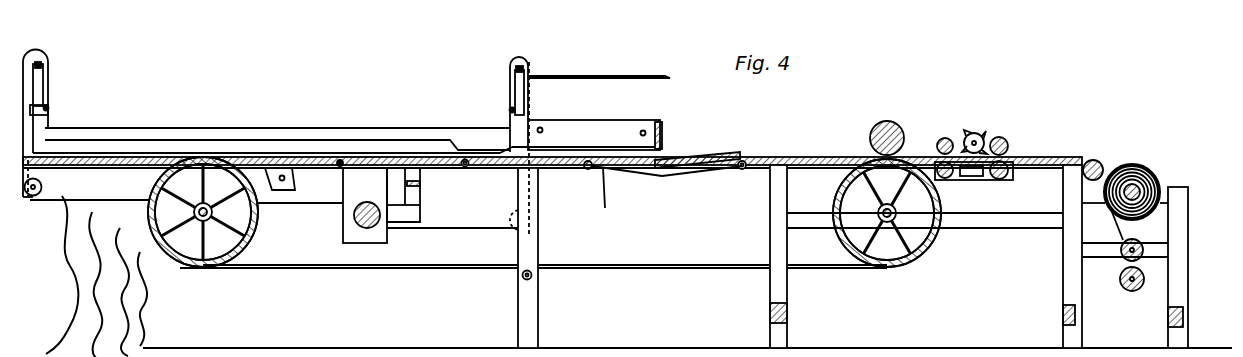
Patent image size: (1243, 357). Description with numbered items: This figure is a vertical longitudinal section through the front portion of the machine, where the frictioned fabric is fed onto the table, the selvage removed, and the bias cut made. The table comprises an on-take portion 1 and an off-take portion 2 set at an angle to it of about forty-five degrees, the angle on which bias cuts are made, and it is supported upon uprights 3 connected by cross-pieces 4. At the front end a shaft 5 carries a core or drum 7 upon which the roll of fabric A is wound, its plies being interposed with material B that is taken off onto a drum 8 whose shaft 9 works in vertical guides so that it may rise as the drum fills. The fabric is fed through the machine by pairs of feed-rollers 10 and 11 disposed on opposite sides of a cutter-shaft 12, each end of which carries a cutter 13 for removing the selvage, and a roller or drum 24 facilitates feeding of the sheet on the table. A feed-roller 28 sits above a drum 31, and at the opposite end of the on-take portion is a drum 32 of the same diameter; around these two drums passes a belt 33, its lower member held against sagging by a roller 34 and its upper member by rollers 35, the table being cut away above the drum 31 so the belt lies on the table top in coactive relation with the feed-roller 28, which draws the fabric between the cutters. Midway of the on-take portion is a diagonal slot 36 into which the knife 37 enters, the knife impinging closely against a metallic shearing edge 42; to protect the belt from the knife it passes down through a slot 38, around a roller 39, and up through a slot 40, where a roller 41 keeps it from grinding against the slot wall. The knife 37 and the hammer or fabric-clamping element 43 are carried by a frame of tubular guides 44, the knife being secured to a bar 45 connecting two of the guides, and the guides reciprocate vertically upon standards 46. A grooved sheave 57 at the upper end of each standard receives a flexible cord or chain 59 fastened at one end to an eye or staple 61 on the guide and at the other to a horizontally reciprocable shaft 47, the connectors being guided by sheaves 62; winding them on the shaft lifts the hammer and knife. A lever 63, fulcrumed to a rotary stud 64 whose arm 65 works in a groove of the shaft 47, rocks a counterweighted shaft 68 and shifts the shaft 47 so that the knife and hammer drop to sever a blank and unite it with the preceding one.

The on-take portion 1 is at (1060, 160).
The off-take portion 2 is at (315, 158).
The uprights 3 is at (548, 307).
The cross-pieces 4 is at (788, 316).
The shaft 5 is at (1160, 192).
The core or drum 7 is at (1150, 186).
The drum 8 is at (1122, 265).
The shaft 9 is at (1138, 246).
The feed-rollers 10 is at (1010, 145).
The feed-rollers 11 is at (947, 138).
The cutter-shaft 12 is at (1006, 138).
The cutter 13 is at (980, 136).
The roller or drum 24 is at (1100, 160).
The feed-roller 28 is at (890, 126).
The drum 31 is at (840, 238).
The drum 32 is at (252, 240).
The belt 33 is at (628, 265).
The roller 34 is at (522, 277).
The rollers 35 is at (465, 160).
The diagonal slot 36 is at (665, 158).
The knife 37 is at (600, 130).
The slot 38 is at (728, 170).
The roller 39 is at (662, 178).
The slot 40 is at (610, 201).
The roller 41 is at (586, 168).
The metallic shearing edge 42 is at (682, 155).
The hammer or fabric-clamping element 43 is at (168, 128).
The tubular guide 44 is at (528, 118).
The bar 45 is at (665, 130).
The standards or pillars 46 is at (42, 90).
The shaft 47 is at (365, 233).
The grooved sheave 57 is at (48, 60).
The cord or chain 59 is at (510, 90).
The eye or staple 61 is at (48, 108).
The grooved sheaves 62 is at (42, 187).
The lever 63 is at (377, 183).
The stud or boss 64 is at (340, 167).
The arm 65 is at (392, 210).
The shaft 68 is at (290, 172).
The roll of fabric A is at (1140, 168).
The material B is at (1110, 233).